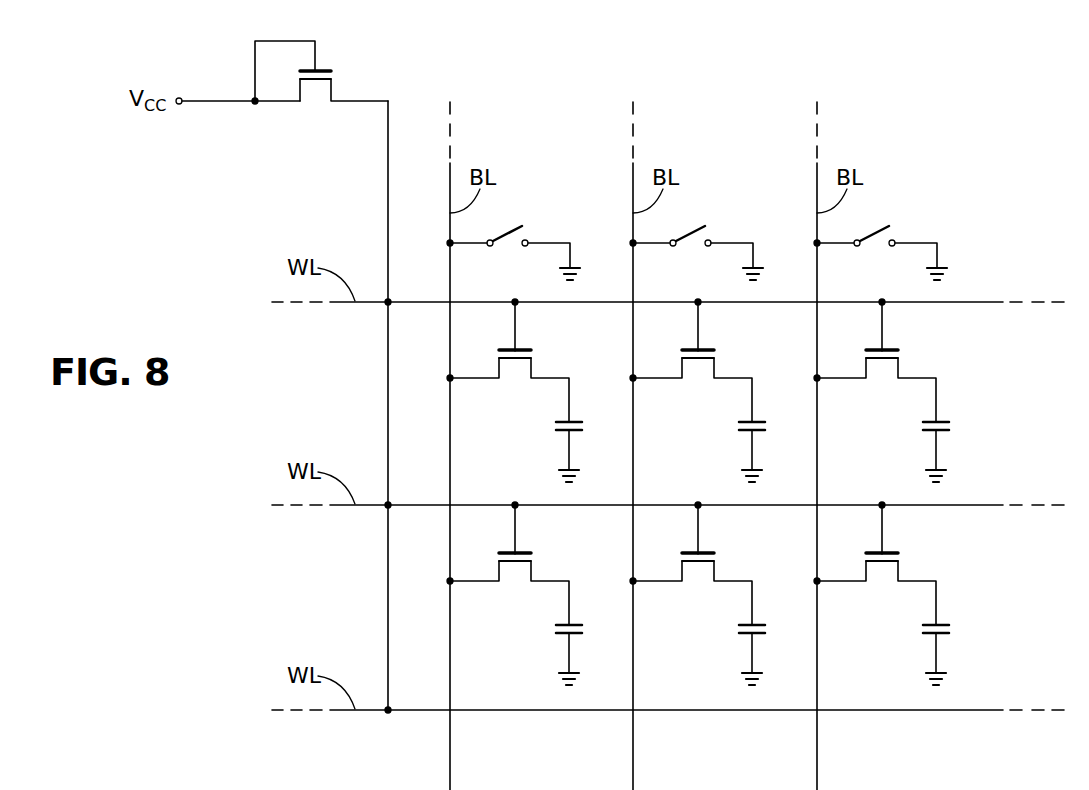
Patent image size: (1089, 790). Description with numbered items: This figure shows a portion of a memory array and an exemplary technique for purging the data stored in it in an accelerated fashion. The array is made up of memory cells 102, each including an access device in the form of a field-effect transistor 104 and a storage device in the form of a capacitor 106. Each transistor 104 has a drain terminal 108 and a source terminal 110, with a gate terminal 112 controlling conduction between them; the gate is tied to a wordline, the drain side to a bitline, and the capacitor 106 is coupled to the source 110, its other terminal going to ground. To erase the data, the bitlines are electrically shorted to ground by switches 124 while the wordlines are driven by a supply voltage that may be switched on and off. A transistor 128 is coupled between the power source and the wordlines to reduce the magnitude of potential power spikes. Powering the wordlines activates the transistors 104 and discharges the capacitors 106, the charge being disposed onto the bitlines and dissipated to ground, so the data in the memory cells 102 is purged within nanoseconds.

The memory cell 102 is at (537, 394).
The field-effect transistor 104 is at (541, 337).
The capacitor 106 is at (591, 431).
The drain terminal 108 is at (482, 386).
The source terminal 110 is at (537, 398).
The gate terminal 112 is at (496, 325).
The switch 124 is at (513, 237).
The transistor 128 is at (333, 78).